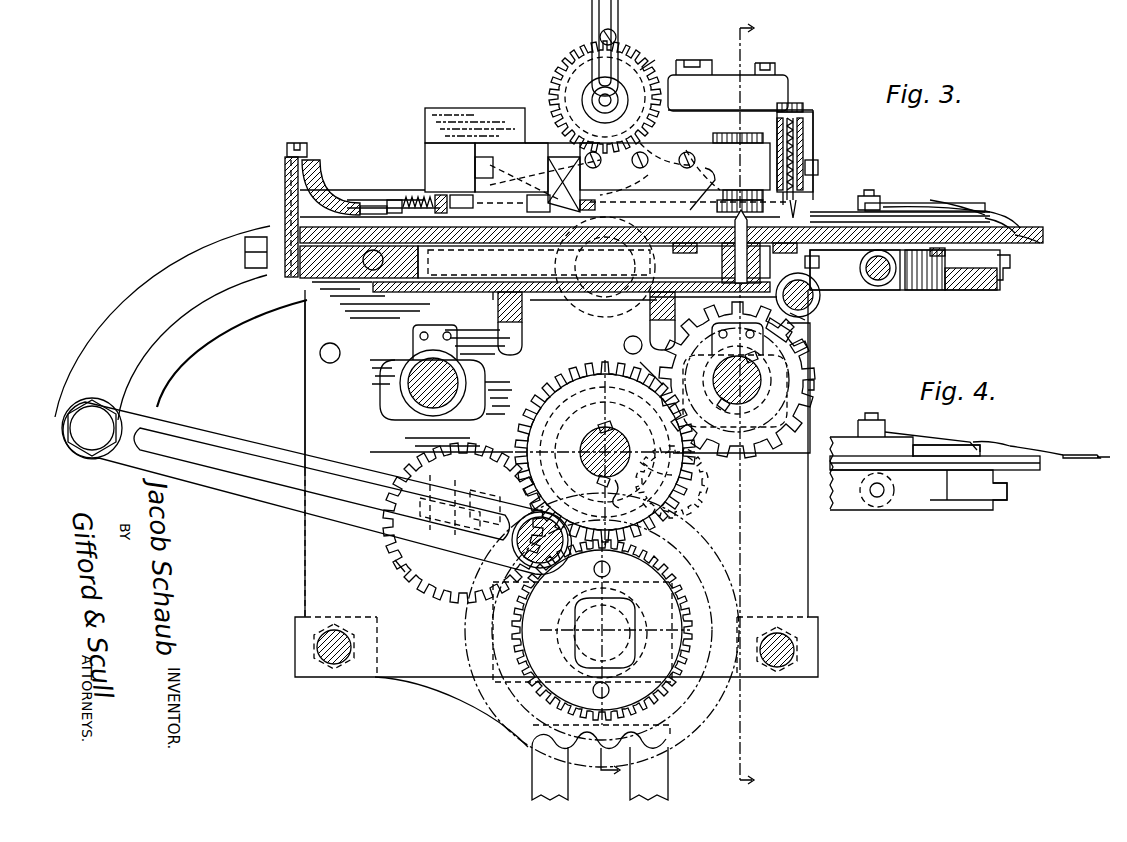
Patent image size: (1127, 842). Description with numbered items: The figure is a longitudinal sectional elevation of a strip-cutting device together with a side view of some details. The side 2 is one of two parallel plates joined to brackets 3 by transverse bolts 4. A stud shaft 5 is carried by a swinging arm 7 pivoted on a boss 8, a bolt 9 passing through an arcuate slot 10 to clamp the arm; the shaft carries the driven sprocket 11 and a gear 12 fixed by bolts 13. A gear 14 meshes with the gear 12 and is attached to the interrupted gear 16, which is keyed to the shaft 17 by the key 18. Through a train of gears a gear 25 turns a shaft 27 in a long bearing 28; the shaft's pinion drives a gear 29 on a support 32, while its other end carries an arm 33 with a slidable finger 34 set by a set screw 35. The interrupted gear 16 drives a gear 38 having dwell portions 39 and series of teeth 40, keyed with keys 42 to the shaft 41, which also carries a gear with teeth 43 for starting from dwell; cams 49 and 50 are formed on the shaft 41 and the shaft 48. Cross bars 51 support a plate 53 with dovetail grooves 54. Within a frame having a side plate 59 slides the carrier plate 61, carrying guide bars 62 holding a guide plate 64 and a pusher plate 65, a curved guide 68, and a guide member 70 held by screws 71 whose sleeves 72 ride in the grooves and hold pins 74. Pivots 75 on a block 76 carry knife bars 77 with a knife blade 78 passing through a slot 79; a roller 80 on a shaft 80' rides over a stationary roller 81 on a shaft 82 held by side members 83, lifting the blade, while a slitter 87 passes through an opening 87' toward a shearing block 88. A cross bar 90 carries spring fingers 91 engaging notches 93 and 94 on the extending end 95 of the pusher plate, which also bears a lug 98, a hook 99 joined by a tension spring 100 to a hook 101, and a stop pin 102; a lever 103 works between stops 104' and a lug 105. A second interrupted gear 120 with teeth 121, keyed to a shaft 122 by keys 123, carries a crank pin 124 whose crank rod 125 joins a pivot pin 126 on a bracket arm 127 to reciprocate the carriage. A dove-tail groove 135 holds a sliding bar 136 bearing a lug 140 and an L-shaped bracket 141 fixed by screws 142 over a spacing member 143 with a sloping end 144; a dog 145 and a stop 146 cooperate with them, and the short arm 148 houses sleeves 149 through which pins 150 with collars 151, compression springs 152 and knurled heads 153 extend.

In FIG. 3, the side plate 2 is at (797, 586).
In FIG. 3, the bracket 3 is at (460, 706).
In FIG. 3, the transverse bolt 4 is at (340, 663).
In FIG. 3, the stud shaft 5 is at (612, 630).
In FIG. 3, the swinging arm 7 is at (675, 534).
In FIG. 3, the boss 8 is at (698, 478).
In FIG. 3, the bolt 9 is at (595, 582).
In FIG. 3, the arcuate slot 10 is at (740, 566).
In FIG. 3, the sprocket 11 is at (606, 10).
In FIG. 3, the gear 12 is at (676, 700).
In FIG. 3, the bolt 13 is at (610, 690).
In FIG. 3, the gear 14 is at (688, 503).
In FIG. 3, the interrupted gear 16 is at (556, 390).
In FIG. 3, the shaft 17 is at (600, 470).
In FIG. 3, the key 18 is at (626, 497).
In FIG. 3, the gear 25 is at (550, 70).
In FIG. 3, the shaft 27 is at (628, 108).
In FIG. 3, the long bearing 28 is at (598, 104).
In FIG. 3, the gear 29 is at (690, 60).
In FIG. 3, the bracket or support 32 is at (765, 75).
In FIG. 3, the arm 33 is at (645, 48).
In FIG. 3, the slidable finger 34 is at (596, 14).
In FIG. 3, the set screw 35 is at (600, 34).
In FIG. 3, the gear 38 is at (800, 375).
In FIG. 3, the rest or dwell portion 39 is at (642, 362).
In FIG. 3, the series of teeth 40 is at (712, 350).
In FIG. 3, the shaft 41 is at (760, 388).
In FIG. 3, the key 42 is at (725, 400).
In FIG. 3, the tooth 43 is at (822, 355).
In FIG. 3, the shaft 48 is at (412, 392).
In FIG. 3, the cam 49 is at (812, 408).
In FIG. 3, the cam 50 is at (415, 415).
In FIG. 3, the fixed cross bar 51 is at (524, 316).
In FIG. 3, the horizontally disposed plate 53 is at (496, 300).
In FIG. 3, the dovetail groove 54 is at (470, 292).
In FIG. 3, the side plate 59 is at (305, 362).
In FIG. 3, the carrier plate 61 is at (1040, 240).
In FIG. 4, the carrier plate 61 is at (1042, 468).
In FIG. 3, the side guide bar 62 is at (840, 216).
In FIG. 3, the guide plate 64 is at (868, 185).
In FIG. 3, the pusher plate 65 is at (385, 204).
In FIG. 4, the pusher plate 65 is at (945, 445).
In FIG. 3, the curved guide 68 is at (315, 162).
In FIG. 3, the guide member 70 is at (810, 275).
In FIG. 3, the screw 71 is at (676, 248).
In FIG. 3, the sleeve 72 is at (805, 262).
In FIG. 3, the pin 74 is at (722, 262).
In FIG. 3, the pivot 75 is at (360, 270).
In FIG. 3, the block 76 is at (262, 272).
In FIG. 3, the knife bar 77 is at (855, 278).
In FIG. 4, the knife bar 77 is at (912, 505).
In FIG. 3, the knife blade 78 is at (1011, 258).
In FIG. 4, the knife blade 78 is at (1005, 478).
In FIG. 3, the slot 79 is at (1012, 236).
In FIG. 3, the roller 80 is at (927, 277).
In FIG. 4, the roller 80 is at (877, 507).
In FIG. 3, the shaft 80' is at (885, 277).
In FIG. 3, the stationary adjustable roller 81 is at (810, 318).
In FIG. 3, the shaft 82 is at (821, 297).
In FIG. 3, the side member 83 is at (795, 335).
In FIG. 3, the slitter 87 is at (969, 276).
In FIG. 4, the slitter 87 is at (958, 502).
In FIG. 3, the opening 87' is at (957, 193).
In FIG. 3, the shearing block 88 is at (990, 213).
In FIG. 4, the shearing block 88 is at (952, 455).
In FIG. 3, the cross bar 90 is at (882, 196).
In FIG. 4, the cross bar 90 is at (884, 425).
In FIG. 3, the spring finger 91 is at (940, 207).
In FIG. 4, the spring finger 91 is at (930, 438).
In FIG. 4, the notch 93 is at (1072, 453).
In FIG. 4, the notch 94 is at (985, 442).
In FIG. 3, the extending end 95 is at (988, 212).
In FIG. 4, the extending end 95 is at (1030, 448).
In FIG. 3, the lug 98 is at (545, 203).
In FIG. 3, the hook 99 is at (708, 166).
In FIG. 3, the tension spring 100 is at (406, 200).
In FIG. 3, the hook 101 is at (415, 200).
In FIG. 3, the stop pin 102 is at (442, 195).
In FIG. 3, the lever 103 is at (539, 258).
In FIG. 3, the stop 104' is at (451, 180).
In FIG. 3, the lug 105 is at (360, 198).
In FIG. 3, the interrupted gear 120 is at (410, 578).
In FIG. 3, the tooth 121 is at (392, 560).
In FIG. 3, the shaft 122 is at (415, 505).
In FIG. 3, the key 123 is at (480, 500).
In FIG. 3, the crank pin 124 is at (520, 560).
In FIG. 3, the crank rod 125 is at (295, 520).
In FIG. 3, the pivot pin 126 is at (92, 450).
In FIG. 3, the bracket arm 127 is at (138, 293).
In FIG. 3, the dove-tail groove 135 is at (430, 150).
In FIG. 3, the horizontally sliding bar 136 is at (535, 143).
In FIG. 3, the lug 140 is at (495, 156).
In FIG. 3, the L-shaped bracket 141 is at (640, 140).
In FIG. 3, the screw 142 is at (590, 155).
In FIG. 3, the spacing member 143 is at (690, 143).
In FIG. 3, the sloping end 144 is at (680, 152).
In FIG. 3, the dog 145 is at (545, 175).
In FIG. 3, the stop 146 is at (765, 128).
In FIG. 3, the short arm 148 is at (805, 150).
In FIG. 3, the sleeve 149 is at (808, 132).
In FIG. 3, the pin 150 is at (797, 203).
In FIG. 3, the collar 151 is at (805, 192).
In FIG. 3, the compression spring 152 is at (818, 165).
In FIG. 3, the knurled head 153 is at (800, 104).